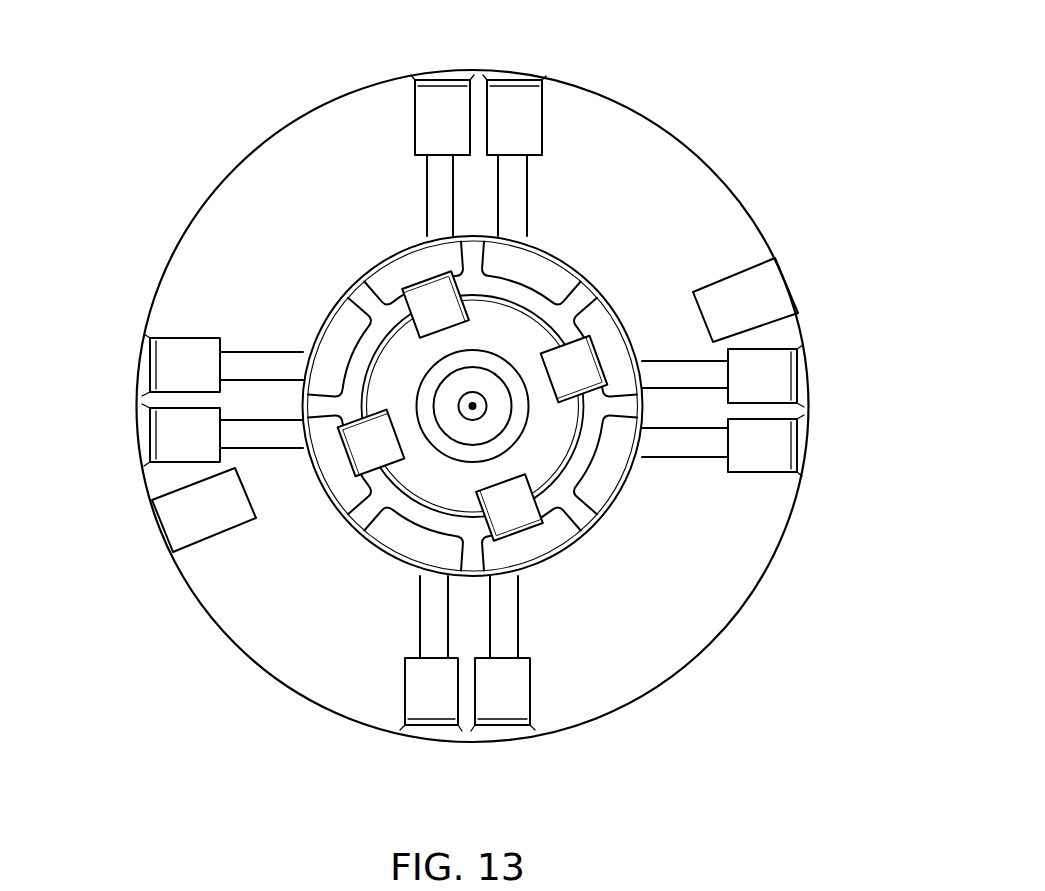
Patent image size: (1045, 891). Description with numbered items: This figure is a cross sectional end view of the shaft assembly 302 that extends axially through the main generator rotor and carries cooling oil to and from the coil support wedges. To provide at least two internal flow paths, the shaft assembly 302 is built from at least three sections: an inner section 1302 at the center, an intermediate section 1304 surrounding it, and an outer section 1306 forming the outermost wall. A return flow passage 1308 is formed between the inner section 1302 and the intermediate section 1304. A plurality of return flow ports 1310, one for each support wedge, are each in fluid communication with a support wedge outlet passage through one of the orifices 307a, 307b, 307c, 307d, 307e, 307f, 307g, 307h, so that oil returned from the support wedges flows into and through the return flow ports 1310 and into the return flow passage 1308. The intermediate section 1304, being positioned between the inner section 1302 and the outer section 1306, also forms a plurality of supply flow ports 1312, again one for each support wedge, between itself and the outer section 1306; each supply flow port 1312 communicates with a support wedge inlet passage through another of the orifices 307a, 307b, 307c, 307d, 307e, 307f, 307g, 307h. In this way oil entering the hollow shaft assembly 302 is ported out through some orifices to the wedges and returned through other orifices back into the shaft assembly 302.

The shaft assembly 302 is at (769, 51).
The orifice 307a is at (437, 90).
The orifice 307b is at (520, 90).
The orifice 307c is at (786, 377).
The orifice 307d is at (786, 446).
The orifice 307e is at (506, 716).
The orifice 307f is at (425, 716).
The orifice 307g is at (165, 432).
The orifice 307h is at (165, 364).
The inner section 1302 is at (517, 417).
The intermediate section 1304 is at (362, 530).
The outer section 1306 is at (631, 122).
The return flow passage 1308 is at (522, 355).
The return flow port 1310 is at (400, 265).
The supply flow port 1312 is at (553, 275).